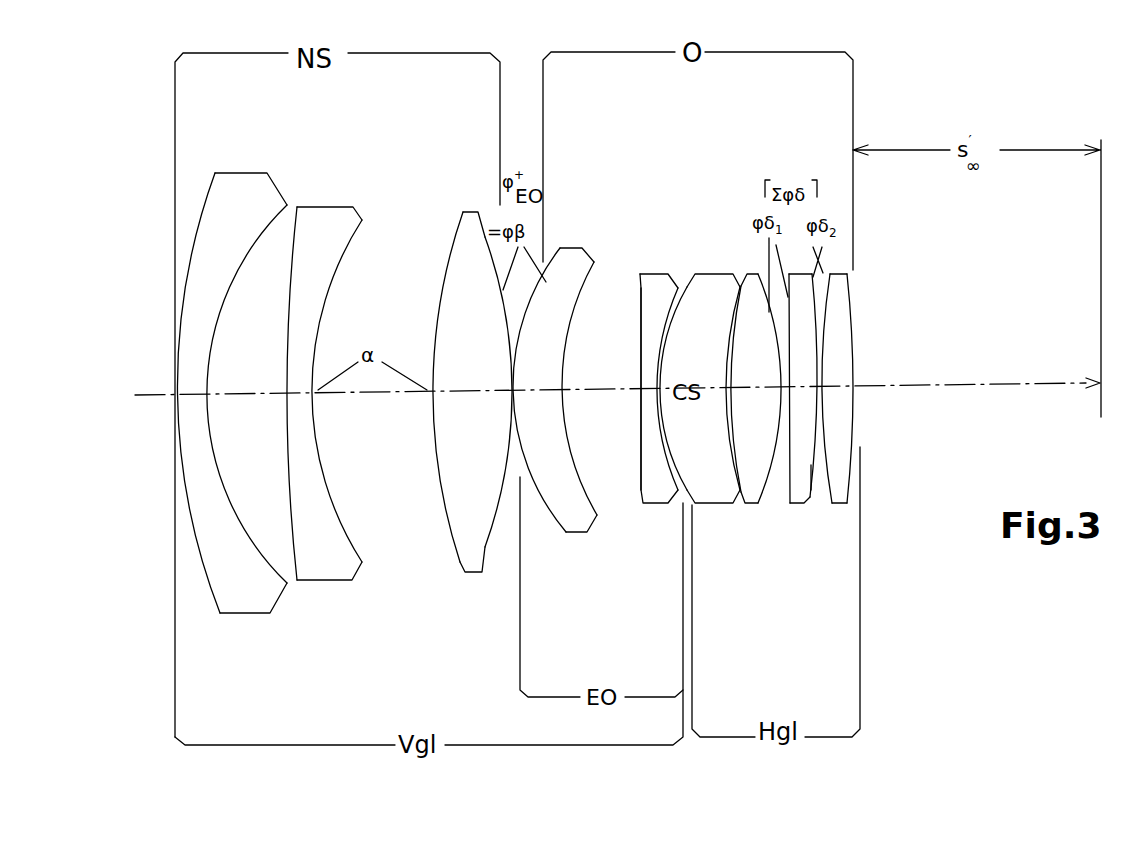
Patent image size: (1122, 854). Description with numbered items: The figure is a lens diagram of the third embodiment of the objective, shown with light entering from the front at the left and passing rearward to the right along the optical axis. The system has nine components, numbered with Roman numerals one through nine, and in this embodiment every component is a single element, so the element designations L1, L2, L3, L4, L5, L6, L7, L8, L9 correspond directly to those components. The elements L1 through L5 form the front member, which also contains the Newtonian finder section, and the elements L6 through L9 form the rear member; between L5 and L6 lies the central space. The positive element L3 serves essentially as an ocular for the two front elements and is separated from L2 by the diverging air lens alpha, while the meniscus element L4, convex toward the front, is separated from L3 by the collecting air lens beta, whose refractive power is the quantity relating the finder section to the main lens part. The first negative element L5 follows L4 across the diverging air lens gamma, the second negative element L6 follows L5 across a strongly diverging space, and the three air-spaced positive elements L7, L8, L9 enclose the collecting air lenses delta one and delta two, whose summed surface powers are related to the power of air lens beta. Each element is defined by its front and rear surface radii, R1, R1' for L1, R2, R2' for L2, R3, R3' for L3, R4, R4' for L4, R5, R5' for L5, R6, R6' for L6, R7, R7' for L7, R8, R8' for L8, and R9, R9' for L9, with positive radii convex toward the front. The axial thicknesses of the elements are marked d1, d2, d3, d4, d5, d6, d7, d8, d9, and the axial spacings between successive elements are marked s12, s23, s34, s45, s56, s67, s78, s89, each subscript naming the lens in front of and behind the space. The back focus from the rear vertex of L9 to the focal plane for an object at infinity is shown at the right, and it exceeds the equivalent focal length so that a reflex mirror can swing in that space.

The lens element of component I L1 is at (232, 411).
The lens element of component II L2 is at (327, 414).
The lens element of component III L3 is at (466, 408).
The lens element of component IV L4 is at (560, 415).
The lens element of component V L5 is at (631, 396).
The lens element of component VI L6 is at (697, 414).
The lens element of component VII L7 is at (745, 387).
The lens element of component VIII L8 is at (839, 452).
The lens element of component IX L9 is at (874, 491).
The front surface radius of element L1 R1 is at (198, 369).
The rear surface radius of element L1 R1' is at (247, 344).
The front surface radius of element L2 R2 is at (301, 353).
The rear surface radius of element L2 R2' is at (339, 347).
The front surface radius of element L3 R3 is at (442, 360).
The rear surface radius of element L3 R3' is at (478, 337).
The front surface radius of element L4 R4 is at (543, 345).
The rear surface radius of element L4 R4' is at (584, 341).
The front surface radius of element L5 R5 is at (616, 305).
The rear surface radius of element L5 R5' is at (657, 327).
The front surface radius of element L6 R6 is at (670, 305).
The rear surface radius of element L6 R6' is at (710, 332).
The front surface radius of element L7 R7 is at (725, 361).
The rear surface radius of element L7 R7' is at (749, 309).
The front surface radius of element L8 R8 is at (841, 374).
The rear surface radius of element L8 R8' is at (850, 381).
The front surface radius of element L9 R9 is at (874, 388).
The rear surface radius of element L9 R9' is at (866, 388).
The axial thickness of element L1 d1 is at (190, 391).
The axial thickness of element L2 d2 is at (295, 391).
The axial thickness of element L3 d3 is at (461, 391).
The axial thickness of element L4 d4 is at (529, 388).
The axial thickness of element L5 d5 is at (653, 387).
The axial thickness of element L6 d6 is at (720, 384).
The axial thickness of element L7 d7 is at (743, 386).
The axial thickness of element L8 d8 is at (794, 384).
The axial thickness of element L9 d9 is at (833, 382).
The axial spacing between L1 and L2 s12 is at (257, 396).
The axial spacing between L2 and L3 s23 is at (378, 396).
The axial spacing between L3 and L4 s34 is at (512, 400).
The axial spacing between L4 and L5 s45 is at (610, 393).
The axial spacing between L5 and L6 s56 is at (688, 405).
The axial spacing between L6 and L7 s67 is at (733, 396).
The axial spacing between L7 and L8 s78 is at (780, 470).
The axial spacing between L8 and L9 s89 is at (823, 400).